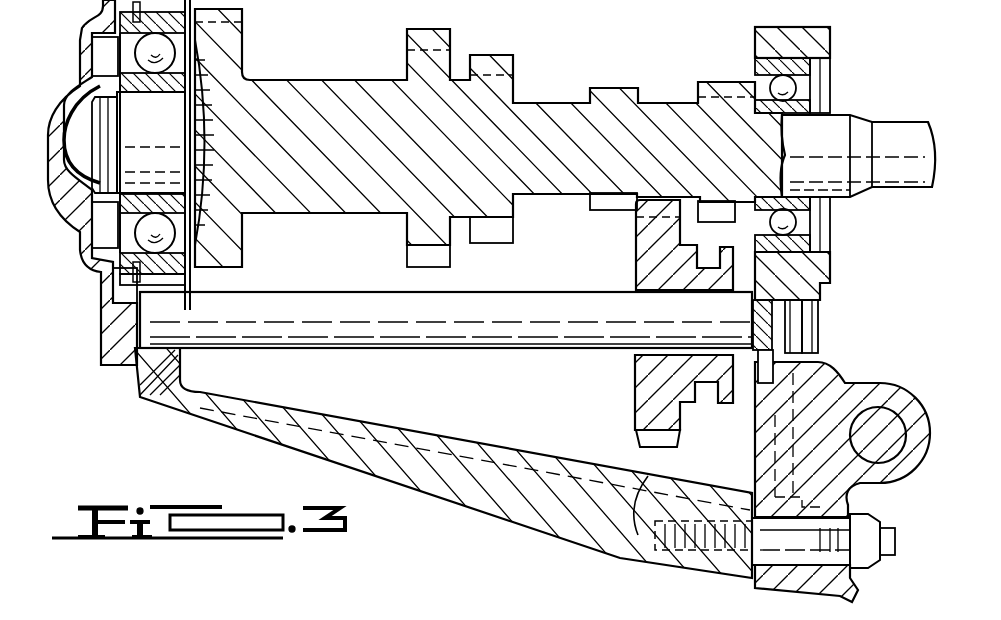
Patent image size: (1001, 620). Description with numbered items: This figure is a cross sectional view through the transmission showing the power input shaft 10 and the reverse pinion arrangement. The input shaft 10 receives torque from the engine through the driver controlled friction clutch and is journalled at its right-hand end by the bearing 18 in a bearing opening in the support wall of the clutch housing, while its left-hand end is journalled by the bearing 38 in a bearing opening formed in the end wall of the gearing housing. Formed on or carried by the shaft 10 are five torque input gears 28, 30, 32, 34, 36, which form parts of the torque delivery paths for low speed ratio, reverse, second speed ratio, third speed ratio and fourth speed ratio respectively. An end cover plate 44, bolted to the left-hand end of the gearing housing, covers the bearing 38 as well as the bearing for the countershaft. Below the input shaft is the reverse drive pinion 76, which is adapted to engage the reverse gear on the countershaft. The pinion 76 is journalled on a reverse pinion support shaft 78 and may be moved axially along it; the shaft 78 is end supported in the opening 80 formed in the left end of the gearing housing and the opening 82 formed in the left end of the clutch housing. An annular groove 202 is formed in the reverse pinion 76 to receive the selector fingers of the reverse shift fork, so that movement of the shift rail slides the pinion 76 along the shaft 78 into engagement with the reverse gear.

The power input shaft 10 is at (900, 132).
The bearing 18 is at (813, 81).
The torque input gear 28 is at (713, 80).
The torque input gear 30 is at (605, 90).
The torque input gear 32 is at (493, 62).
The torque input gear 34 is at (415, 40).
The torque input gear 36 is at (242, 16).
The bearing 38 is at (135, 53).
The end cover plate 44 is at (80, 237).
The reverse drive pinion 76 is at (652, 411).
The reverse pinion support shaft 78 is at (340, 343).
The opening 80 is at (150, 392).
The opening 82 is at (805, 343).
The annular groove 202 is at (712, 385).